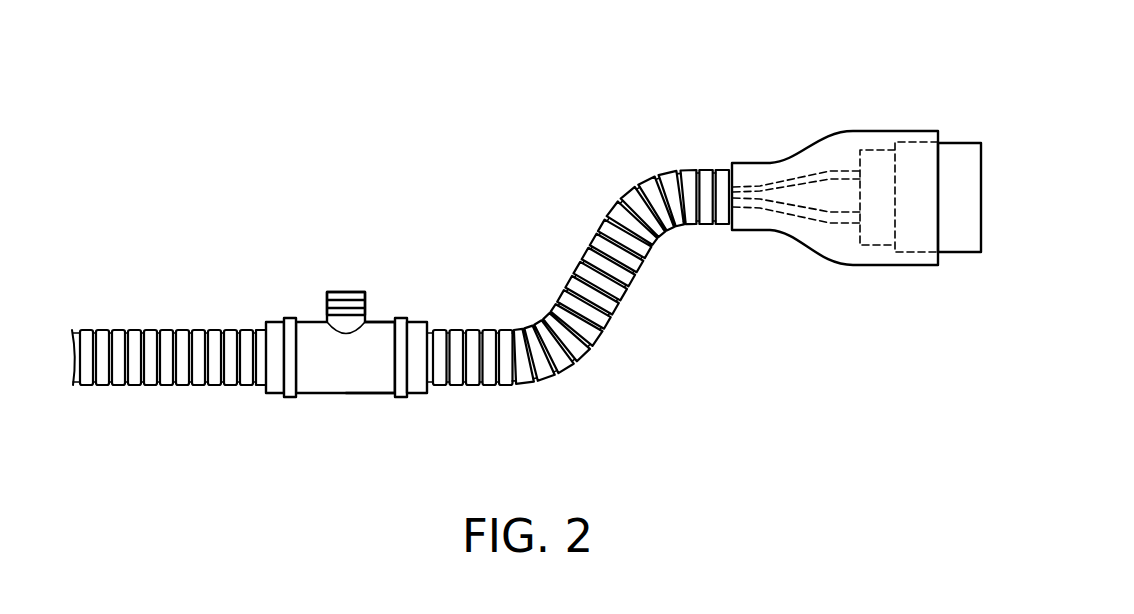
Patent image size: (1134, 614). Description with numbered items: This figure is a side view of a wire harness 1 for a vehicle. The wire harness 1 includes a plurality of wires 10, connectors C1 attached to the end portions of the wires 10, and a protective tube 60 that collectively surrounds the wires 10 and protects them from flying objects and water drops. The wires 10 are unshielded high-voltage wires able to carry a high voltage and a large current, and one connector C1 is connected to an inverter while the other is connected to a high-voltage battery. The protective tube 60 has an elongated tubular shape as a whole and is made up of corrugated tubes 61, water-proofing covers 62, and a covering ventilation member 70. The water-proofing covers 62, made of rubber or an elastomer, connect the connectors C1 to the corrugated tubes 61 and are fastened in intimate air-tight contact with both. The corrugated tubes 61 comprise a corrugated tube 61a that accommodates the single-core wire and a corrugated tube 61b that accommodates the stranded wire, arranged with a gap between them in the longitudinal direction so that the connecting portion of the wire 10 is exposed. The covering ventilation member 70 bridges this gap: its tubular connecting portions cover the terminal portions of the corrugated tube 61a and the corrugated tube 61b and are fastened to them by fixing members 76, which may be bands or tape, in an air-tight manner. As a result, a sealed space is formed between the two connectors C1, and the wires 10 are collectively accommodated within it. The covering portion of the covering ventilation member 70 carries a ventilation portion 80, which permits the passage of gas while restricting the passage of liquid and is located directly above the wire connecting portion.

The wire harness 1 is at (763, 46).
The wires 10 is at (817, 172).
The protective tube 60 is at (682, 171).
The corrugated tubes 61 is at (402, 443).
The corrugated tube 61a is at (234, 387).
The corrugated tube 61b is at (457, 387).
The water-proofing covers 62 is at (877, 131).
The covering ventilation member 70 is at (416, 318).
The fixing members 76 is at (289, 318).
The ventilation portion 80 is at (368, 292).
The connectors C1 is at (958, 143).